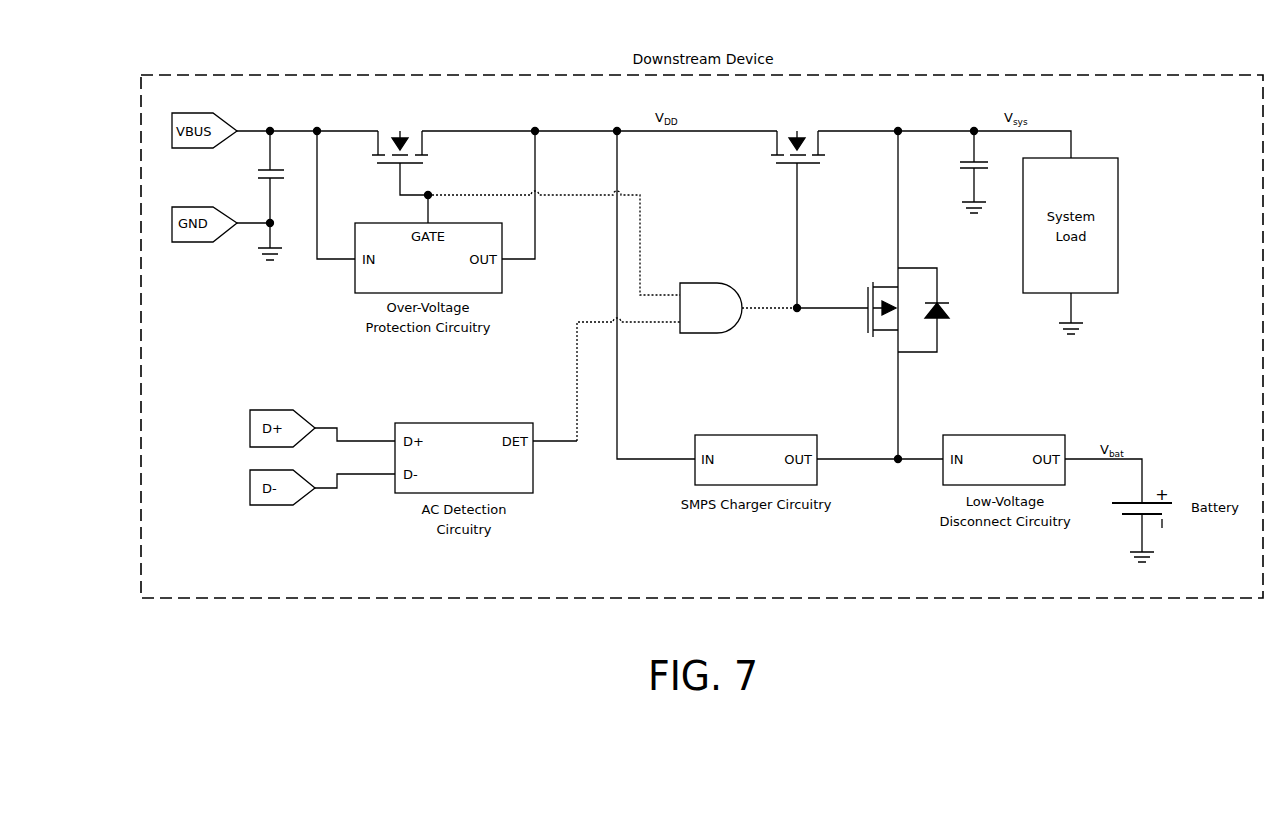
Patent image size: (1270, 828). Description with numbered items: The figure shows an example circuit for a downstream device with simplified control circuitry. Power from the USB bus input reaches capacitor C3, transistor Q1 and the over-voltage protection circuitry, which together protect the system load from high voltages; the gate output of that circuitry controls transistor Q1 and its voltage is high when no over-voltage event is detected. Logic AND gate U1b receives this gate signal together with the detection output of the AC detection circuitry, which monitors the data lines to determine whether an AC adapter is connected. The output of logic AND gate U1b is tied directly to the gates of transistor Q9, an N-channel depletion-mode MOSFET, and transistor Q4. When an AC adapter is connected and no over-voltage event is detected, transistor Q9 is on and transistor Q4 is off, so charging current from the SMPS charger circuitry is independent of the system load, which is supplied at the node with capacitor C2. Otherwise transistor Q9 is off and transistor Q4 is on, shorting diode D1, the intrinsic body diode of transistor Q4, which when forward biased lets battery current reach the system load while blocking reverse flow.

The transistor Q1 is at (400, 166).
The transistor Q9 is at (798, 209).
The transistor Q4 is at (883, 297).
The diode D1 is at (934, 310).
The capacitor C2 is at (962, 172).
The capacitor C3 is at (255, 195).
The logic AND gate U1b is at (738, 299).